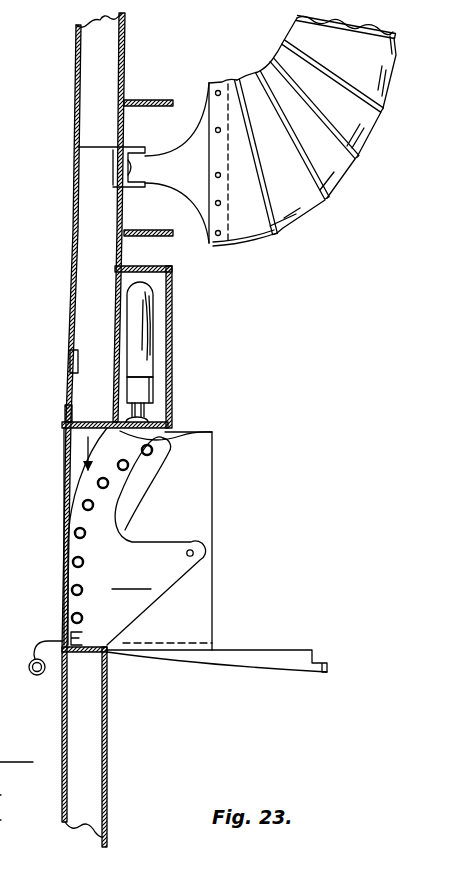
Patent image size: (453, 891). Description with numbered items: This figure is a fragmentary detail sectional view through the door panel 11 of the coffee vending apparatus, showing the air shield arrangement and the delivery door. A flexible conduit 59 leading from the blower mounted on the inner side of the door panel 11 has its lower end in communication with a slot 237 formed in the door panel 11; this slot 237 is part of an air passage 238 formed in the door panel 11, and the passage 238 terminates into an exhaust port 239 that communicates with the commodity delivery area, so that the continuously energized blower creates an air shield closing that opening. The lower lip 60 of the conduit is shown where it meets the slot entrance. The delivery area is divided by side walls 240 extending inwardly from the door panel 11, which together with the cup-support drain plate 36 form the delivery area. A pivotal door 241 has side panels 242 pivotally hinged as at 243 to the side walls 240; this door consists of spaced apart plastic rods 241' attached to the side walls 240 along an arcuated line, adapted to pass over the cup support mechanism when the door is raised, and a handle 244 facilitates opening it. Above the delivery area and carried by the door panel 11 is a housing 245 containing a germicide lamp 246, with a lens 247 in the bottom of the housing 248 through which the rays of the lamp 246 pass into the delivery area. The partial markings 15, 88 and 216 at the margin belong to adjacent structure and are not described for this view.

The door panel 11 is at (72, 307).
The air passage 238 is at (83, 207).
The slot 237 is at (126, 163).
The flexible conduit 59 is at (290, 212).
The hood lower lip 60 is at (226, 250).
The housing 245 is at (172, 306).
The germicide lamp 246 is at (153, 343).
The lens 247 is at (148, 421).
The exhaust port 239 is at (93, 428).
The housing 248 is at (200, 434).
The side walls 240 is at (212, 500).
The pivotal hinge 243 is at (194, 553).
The side panels 242 is at (135, 536).
The plastic rods 241' is at (123, 491).
The pivotal door 241 is at (49, 581).
The handle 244 is at (47, 640).
The cup-support drain plate 36 is at (276, 663).
The frame member 15 is at (21, 760).
The frame member 88 is at (10, 795).
The frame member 216 is at (15, 819).